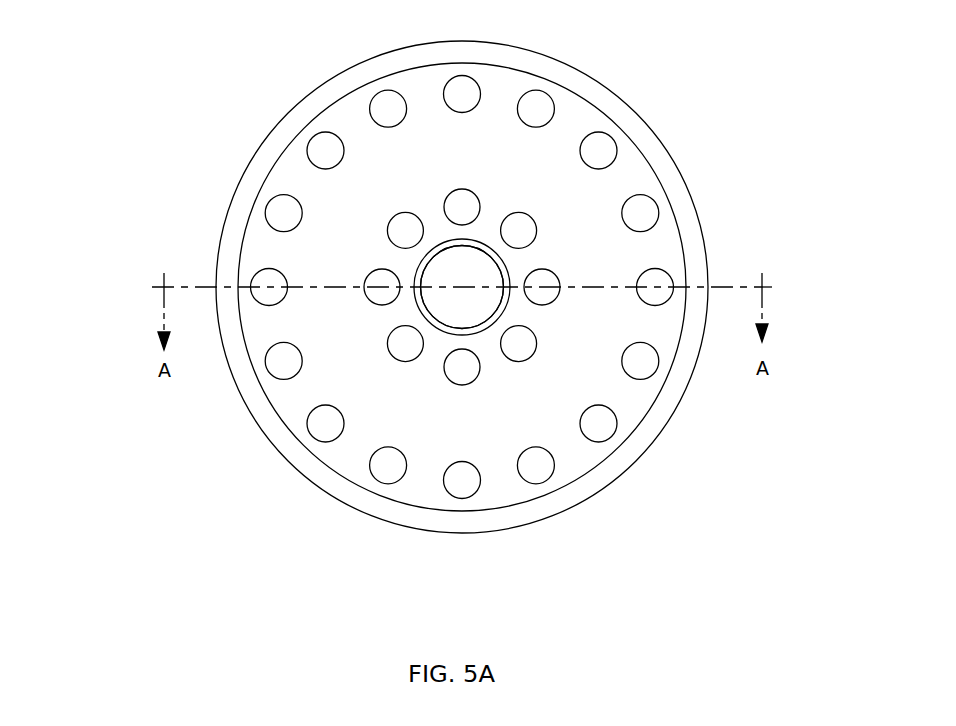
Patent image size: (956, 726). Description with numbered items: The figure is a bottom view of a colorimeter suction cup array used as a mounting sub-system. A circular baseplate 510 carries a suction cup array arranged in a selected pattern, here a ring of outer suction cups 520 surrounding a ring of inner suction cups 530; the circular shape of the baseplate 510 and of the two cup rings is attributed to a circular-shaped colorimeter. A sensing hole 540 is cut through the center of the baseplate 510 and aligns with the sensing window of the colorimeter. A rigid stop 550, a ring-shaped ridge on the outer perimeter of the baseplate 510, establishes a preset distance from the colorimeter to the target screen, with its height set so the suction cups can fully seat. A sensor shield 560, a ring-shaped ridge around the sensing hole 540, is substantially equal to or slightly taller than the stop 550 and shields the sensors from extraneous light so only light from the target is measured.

The baseplate 510 is at (583, 73).
The outer suction cups 520 is at (307, 154).
The inner suction cups 530 is at (382, 305).
The sensing hole 540 is at (467, 312).
The rigid stop 550 is at (318, 100).
The sensor shield 560 is at (507, 307).